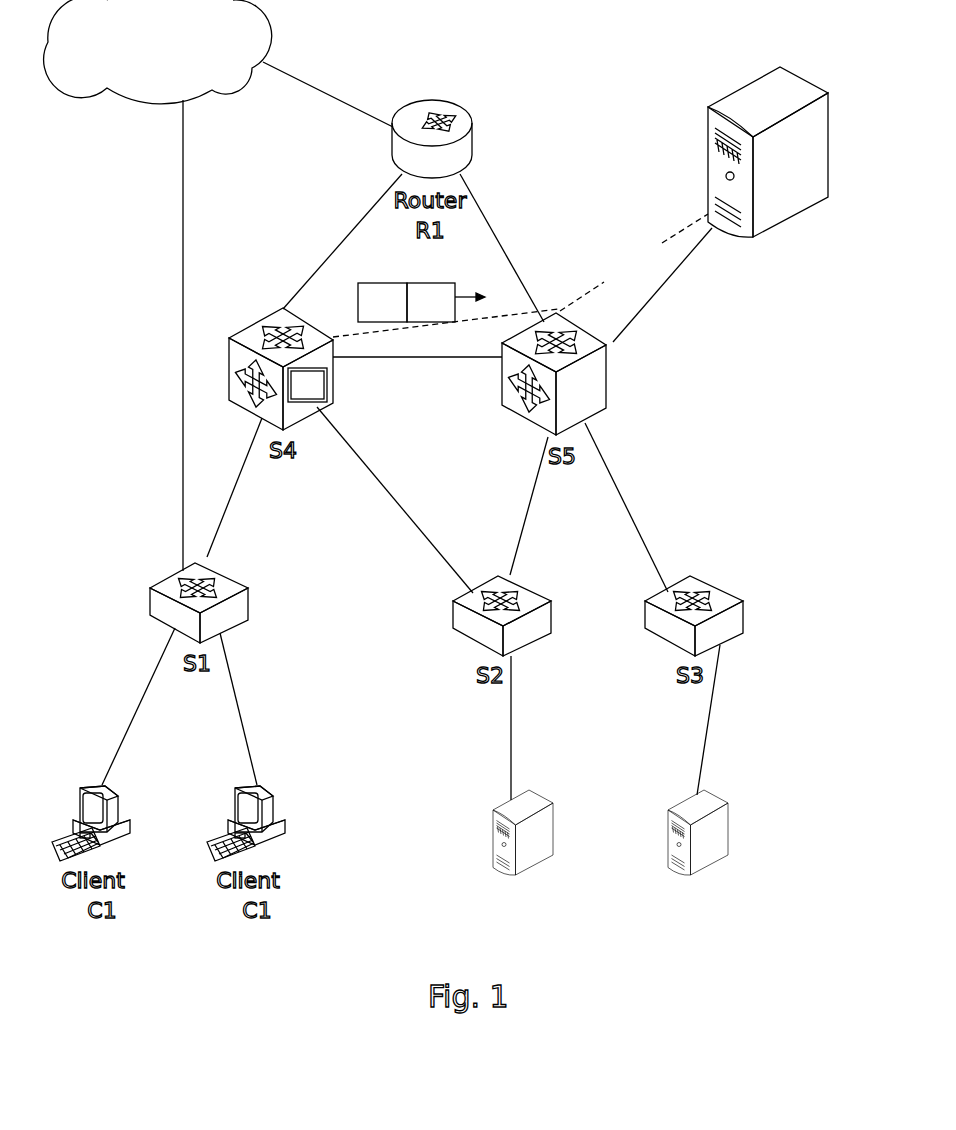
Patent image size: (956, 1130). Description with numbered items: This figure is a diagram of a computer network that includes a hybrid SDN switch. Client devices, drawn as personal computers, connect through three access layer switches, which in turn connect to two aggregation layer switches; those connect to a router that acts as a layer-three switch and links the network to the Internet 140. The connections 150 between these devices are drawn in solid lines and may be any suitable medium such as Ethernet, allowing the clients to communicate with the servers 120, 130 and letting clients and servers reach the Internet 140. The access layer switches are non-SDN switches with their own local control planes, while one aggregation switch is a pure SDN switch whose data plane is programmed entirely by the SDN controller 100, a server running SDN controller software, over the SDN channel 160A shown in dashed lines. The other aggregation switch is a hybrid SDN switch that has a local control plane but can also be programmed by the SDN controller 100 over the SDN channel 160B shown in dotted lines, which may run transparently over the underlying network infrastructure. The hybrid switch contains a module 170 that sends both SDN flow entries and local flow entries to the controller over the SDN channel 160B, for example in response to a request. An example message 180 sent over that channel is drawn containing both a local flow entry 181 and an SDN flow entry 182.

The SDN controller 100 is at (774, 191).
The server 120 is at (530, 859).
The server 130 is at (707, 859).
The Internet 140 is at (180, 39).
The connections 150 is at (634, 507).
The SDN channel 160A is at (733, 230).
The SDN channel 160B is at (634, 262).
The module 170 is at (307, 385).
The message 180 is at (421, 284).
The local flow entry 181 is at (382, 302).
The SDN flow entry 182 is at (410, 267).